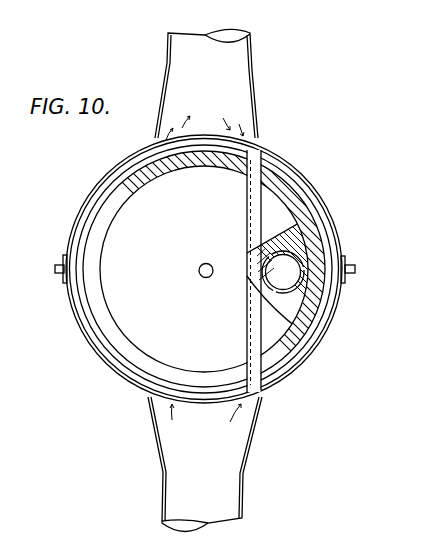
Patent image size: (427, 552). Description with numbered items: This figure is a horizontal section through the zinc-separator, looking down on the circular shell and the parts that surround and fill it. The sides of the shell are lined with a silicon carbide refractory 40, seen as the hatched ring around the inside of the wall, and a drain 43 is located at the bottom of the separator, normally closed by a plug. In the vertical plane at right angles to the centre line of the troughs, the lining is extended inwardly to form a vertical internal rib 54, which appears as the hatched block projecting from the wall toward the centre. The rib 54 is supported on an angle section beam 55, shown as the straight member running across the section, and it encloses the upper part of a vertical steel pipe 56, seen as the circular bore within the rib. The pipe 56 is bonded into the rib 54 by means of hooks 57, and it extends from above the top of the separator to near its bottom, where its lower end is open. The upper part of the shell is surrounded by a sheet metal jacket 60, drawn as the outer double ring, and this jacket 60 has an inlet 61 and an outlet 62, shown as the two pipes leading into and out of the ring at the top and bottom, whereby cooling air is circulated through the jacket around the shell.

The silicon carbide refractory 40 is at (94, 258).
The drain 43 is at (199, 271).
The vertical internal rib 54 is at (288, 310).
The angle section beam 55 is at (253, 328).
The vertical steel pipe 56 is at (303, 274).
The hooks 57 is at (289, 246).
The sheet metal jacket 60 is at (92, 205).
The inlet 61 is at (177, 513).
The outlet 62 is at (232, 58).